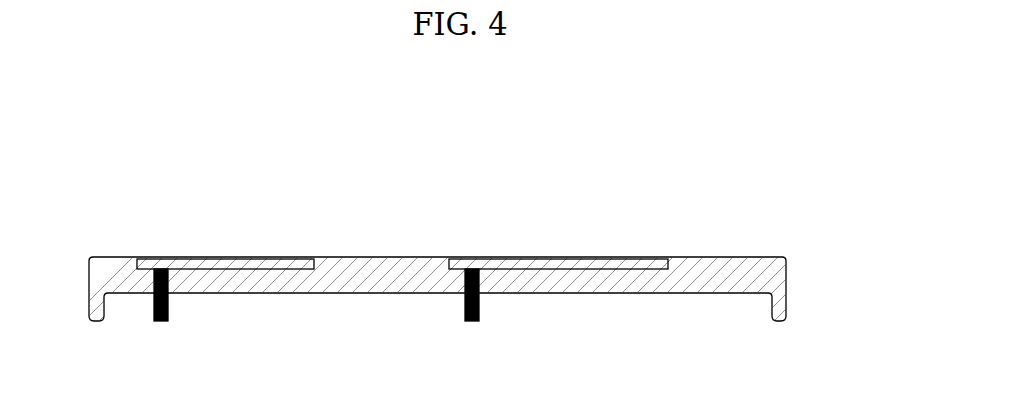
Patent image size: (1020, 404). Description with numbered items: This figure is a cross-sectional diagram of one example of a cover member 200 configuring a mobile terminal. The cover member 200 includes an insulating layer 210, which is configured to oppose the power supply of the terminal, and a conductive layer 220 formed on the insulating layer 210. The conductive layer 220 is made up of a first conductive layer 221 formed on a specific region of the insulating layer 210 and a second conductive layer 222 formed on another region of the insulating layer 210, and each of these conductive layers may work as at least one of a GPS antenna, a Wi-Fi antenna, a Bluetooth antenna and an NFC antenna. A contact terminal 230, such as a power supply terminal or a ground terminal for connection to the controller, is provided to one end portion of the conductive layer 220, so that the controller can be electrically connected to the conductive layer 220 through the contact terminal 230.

The cover member 200 is at (472, 270).
The insulating layer 210 is at (706, 285).
The conductive layer 220 is at (402, 211).
The first conductive layer 221 is at (282, 258).
The second conductive layer 222 is at (558, 234).
The contact terminal 230 is at (161, 322).